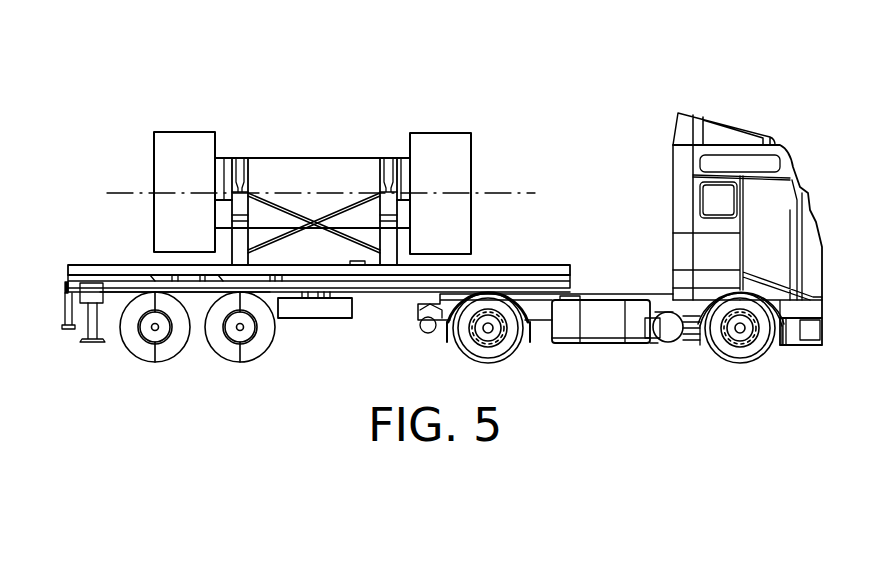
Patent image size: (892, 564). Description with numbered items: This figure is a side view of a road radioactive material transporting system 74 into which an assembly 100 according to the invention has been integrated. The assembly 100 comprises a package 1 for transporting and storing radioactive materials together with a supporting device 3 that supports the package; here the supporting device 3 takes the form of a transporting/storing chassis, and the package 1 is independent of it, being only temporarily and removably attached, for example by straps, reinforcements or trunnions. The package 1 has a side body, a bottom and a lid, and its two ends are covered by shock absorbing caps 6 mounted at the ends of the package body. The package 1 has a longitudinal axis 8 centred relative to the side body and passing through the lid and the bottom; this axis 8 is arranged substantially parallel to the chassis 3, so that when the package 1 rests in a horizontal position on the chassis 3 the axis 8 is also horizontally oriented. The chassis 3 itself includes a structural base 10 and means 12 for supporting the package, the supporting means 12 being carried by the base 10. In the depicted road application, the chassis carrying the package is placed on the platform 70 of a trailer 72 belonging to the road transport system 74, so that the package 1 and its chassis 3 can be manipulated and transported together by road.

The assembly 100 is at (188, 86).
The package 1 is at (308, 112).
The means for supporting the package 12 is at (247, 197).
The shock absorbing caps 6 is at (168, 142).
The longitudinal axis 8 is at (535, 190).
The trailer 72 is at (555, 257).
The structural base 10 is at (93, 263).
The supporting device 3 is at (133, 273).
The platform 70 is at (122, 284).
The road transport system 74 is at (752, 120).